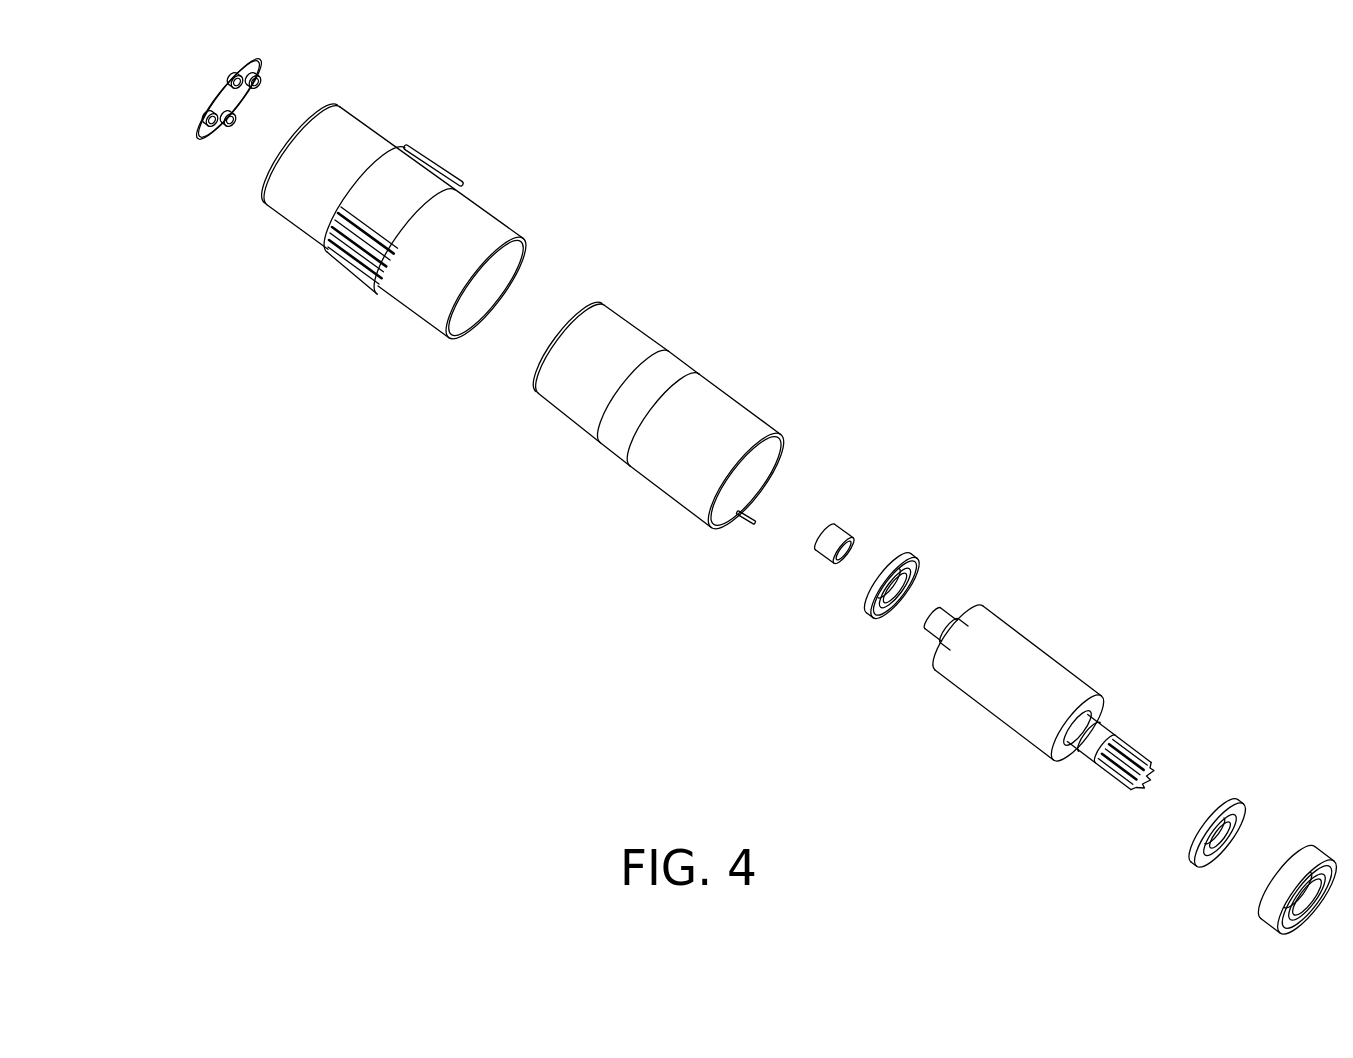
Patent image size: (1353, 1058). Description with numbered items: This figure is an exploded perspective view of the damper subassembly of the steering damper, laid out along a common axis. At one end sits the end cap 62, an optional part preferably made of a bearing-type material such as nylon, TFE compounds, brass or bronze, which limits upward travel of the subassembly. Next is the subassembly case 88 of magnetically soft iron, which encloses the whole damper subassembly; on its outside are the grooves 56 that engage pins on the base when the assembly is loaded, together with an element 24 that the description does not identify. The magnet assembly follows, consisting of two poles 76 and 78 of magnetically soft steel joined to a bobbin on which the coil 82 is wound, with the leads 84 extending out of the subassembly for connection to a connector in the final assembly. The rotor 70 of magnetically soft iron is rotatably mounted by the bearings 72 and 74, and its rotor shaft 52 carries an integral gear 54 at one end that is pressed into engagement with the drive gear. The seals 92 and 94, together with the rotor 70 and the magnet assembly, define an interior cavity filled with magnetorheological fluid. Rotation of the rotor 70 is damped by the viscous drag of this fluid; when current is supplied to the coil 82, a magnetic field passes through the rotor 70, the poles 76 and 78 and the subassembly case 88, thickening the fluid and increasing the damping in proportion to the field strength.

The end cap 62 is at (197, 117).
The subassembly case 88 is at (363, 226).
The clamp band 24 is at (355, 225).
The grooves 56 is at (358, 223).
The pole 76 is at (621, 366).
The coil 82 is at (679, 395).
The pole 78 is at (720, 456).
The leads 84 is at (716, 539).
The bearing 72 is at (867, 526).
The seal 92 is at (916, 568).
The rotor 70 is at (1018, 677).
The rotor shaft 52 is at (1110, 728).
The gear 54 is at (1091, 778).
The seal 94 is at (1170, 839).
The bearing 74 is at (1258, 894).